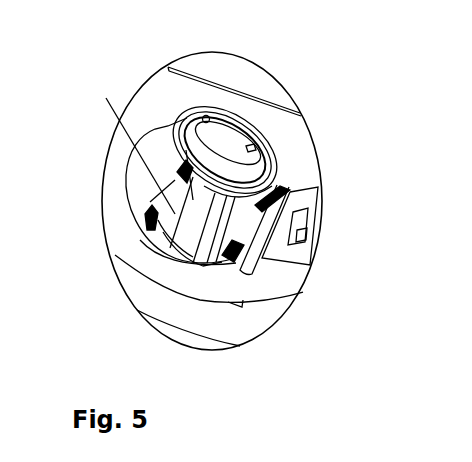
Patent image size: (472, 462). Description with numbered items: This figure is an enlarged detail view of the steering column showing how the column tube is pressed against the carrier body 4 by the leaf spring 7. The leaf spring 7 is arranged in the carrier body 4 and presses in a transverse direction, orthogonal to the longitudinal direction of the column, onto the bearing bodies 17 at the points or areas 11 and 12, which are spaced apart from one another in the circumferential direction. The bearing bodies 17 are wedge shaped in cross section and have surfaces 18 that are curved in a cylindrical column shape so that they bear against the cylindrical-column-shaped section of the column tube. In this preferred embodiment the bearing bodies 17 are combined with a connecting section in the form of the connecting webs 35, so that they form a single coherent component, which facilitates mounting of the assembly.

The carrier body 4 is at (160, 277).
The leaf spring 7 is at (184, 255).
The point or area 11 is at (207, 116).
The point or area 12 is at (284, 190).
The bearing body 17 is at (142, 212).
The surface 18 is at (188, 145).
The connecting web 35 is at (255, 145).